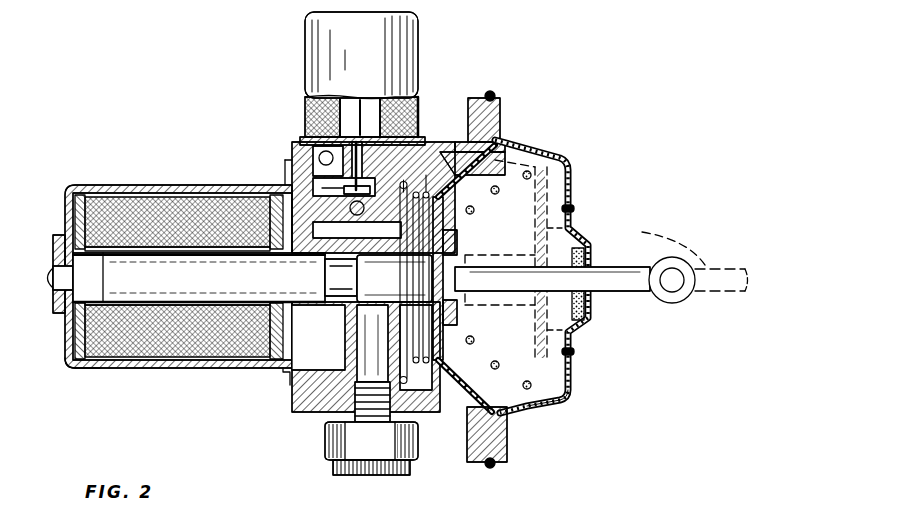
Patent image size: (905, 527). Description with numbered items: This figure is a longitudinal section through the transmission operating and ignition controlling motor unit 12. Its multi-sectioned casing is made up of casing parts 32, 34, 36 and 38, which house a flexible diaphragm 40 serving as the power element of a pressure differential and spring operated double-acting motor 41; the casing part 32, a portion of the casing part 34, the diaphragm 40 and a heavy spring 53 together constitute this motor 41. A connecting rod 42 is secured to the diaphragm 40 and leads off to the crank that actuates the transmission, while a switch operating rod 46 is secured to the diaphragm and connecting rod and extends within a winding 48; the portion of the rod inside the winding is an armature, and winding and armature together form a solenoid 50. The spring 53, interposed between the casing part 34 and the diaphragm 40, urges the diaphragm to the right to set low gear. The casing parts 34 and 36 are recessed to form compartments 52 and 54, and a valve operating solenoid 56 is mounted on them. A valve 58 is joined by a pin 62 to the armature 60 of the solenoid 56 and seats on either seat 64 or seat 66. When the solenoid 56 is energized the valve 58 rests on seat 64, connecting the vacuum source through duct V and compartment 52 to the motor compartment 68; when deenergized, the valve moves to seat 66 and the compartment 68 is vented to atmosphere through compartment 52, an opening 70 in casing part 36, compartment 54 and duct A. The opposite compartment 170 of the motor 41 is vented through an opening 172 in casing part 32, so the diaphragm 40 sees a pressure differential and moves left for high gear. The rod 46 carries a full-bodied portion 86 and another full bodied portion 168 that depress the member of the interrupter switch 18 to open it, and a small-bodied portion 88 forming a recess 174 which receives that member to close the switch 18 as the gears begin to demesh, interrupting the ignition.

The actuator assembly 12 is at (230, 110).
The interrupter switch 18 is at (290, 396).
The casing part 32 is at (552, 157).
The casing part 34 is at (336, 404).
The casing part 36 is at (290, 150).
The casing part 38 is at (148, 185).
The flexible diaphragm 40 is at (514, 398).
The double-acting motor 41 is at (562, 402).
The connecting rod 42 is at (646, 236).
The switch operating rod 46 is at (66, 314).
The winding 48 is at (90, 370).
The solenoid 50 is at (200, 375).
The compartment 52 is at (357, 230).
The heavy spring 53 is at (520, 178).
The compartment 54 is at (302, 170).
The valve operating solenoid 56 is at (408, 55).
The valve 58 is at (308, 180).
The armature 60 is at (306, 102).
The pin 62 is at (312, 120).
The seat 64 is at (418, 118).
The seat 66 is at (292, 188).
The compartment 68 is at (445, 170).
The opening 70 is at (416, 100).
The full-bodied portion 86 is at (394, 278).
The small-bodied or recessed portion 88 is at (338, 289).
The full bodied portion 168 is at (199, 277).
The compartment 170 is at (560, 178).
The opening 172 is at (535, 408).
The recess 174 is at (346, 310).